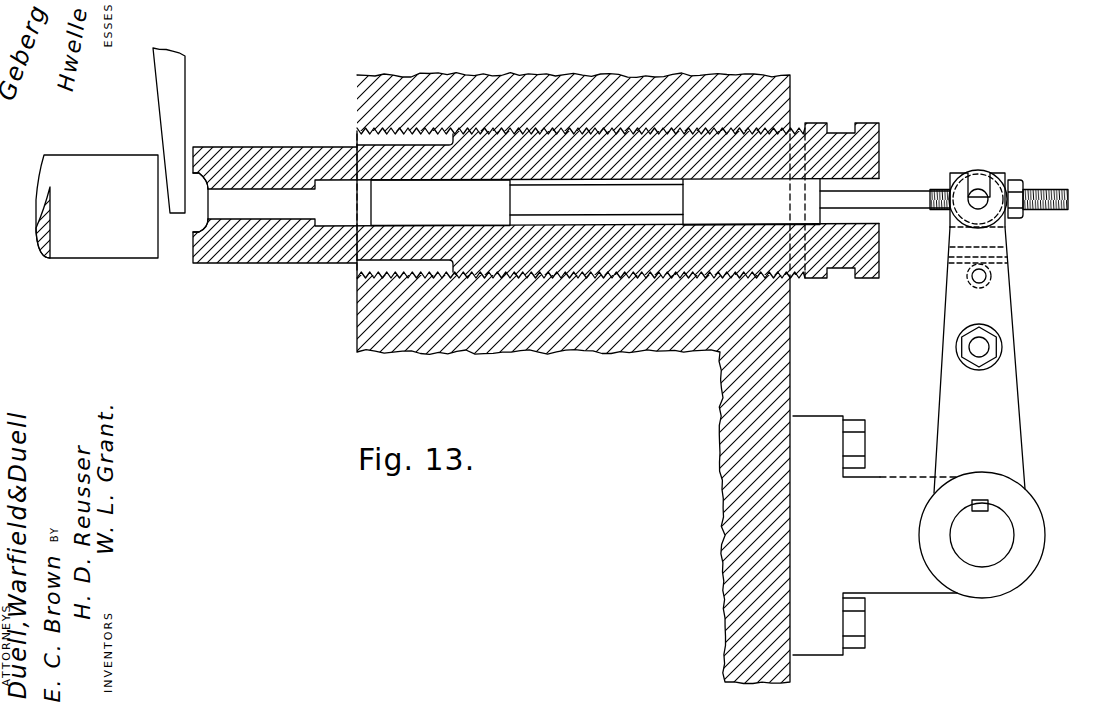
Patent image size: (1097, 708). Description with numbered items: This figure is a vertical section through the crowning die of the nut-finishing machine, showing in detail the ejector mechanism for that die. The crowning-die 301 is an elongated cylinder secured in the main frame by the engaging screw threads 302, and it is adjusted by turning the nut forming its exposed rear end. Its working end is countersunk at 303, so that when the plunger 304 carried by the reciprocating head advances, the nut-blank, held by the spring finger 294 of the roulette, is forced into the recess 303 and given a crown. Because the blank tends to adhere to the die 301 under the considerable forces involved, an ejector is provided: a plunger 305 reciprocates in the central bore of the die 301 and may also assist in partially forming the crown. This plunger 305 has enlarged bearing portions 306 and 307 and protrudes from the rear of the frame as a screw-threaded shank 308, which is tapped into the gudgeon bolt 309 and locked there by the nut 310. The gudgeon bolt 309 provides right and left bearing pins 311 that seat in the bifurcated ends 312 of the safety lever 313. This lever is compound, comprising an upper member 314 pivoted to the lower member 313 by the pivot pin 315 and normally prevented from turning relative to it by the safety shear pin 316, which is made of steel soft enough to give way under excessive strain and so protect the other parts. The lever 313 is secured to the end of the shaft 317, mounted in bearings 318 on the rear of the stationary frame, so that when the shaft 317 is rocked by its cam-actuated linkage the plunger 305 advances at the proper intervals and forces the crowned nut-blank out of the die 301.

The spring finger 294 is at (181, 107).
The crowning-die 301 is at (295, 148).
The engaging screw threads 302 is at (412, 122).
The countersunk recess 303 is at (200, 220).
The plunger 304 is at (97, 206).
The ejector plunger 305 is at (543, 203).
The enlarged bearing portion 306 is at (527, 203).
The enlarged bearing portion 307 is at (751, 202).
The screw-threaded shank 308 is at (1052, 182).
The gudgeon bolt 309 is at (977, 175).
The nut 310 is at (1013, 182).
The bearing pins 311 is at (977, 199).
The bifurcated ends 312 is at (1001, 229).
The safety lever 313 is at (979, 360).
The upper member 314 is at (979, 336).
The pivot pin 315 is at (977, 347).
The safety shear pin 316 is at (977, 275).
The shaft 317 is at (982, 535).
The bearings 318 is at (875, 535).